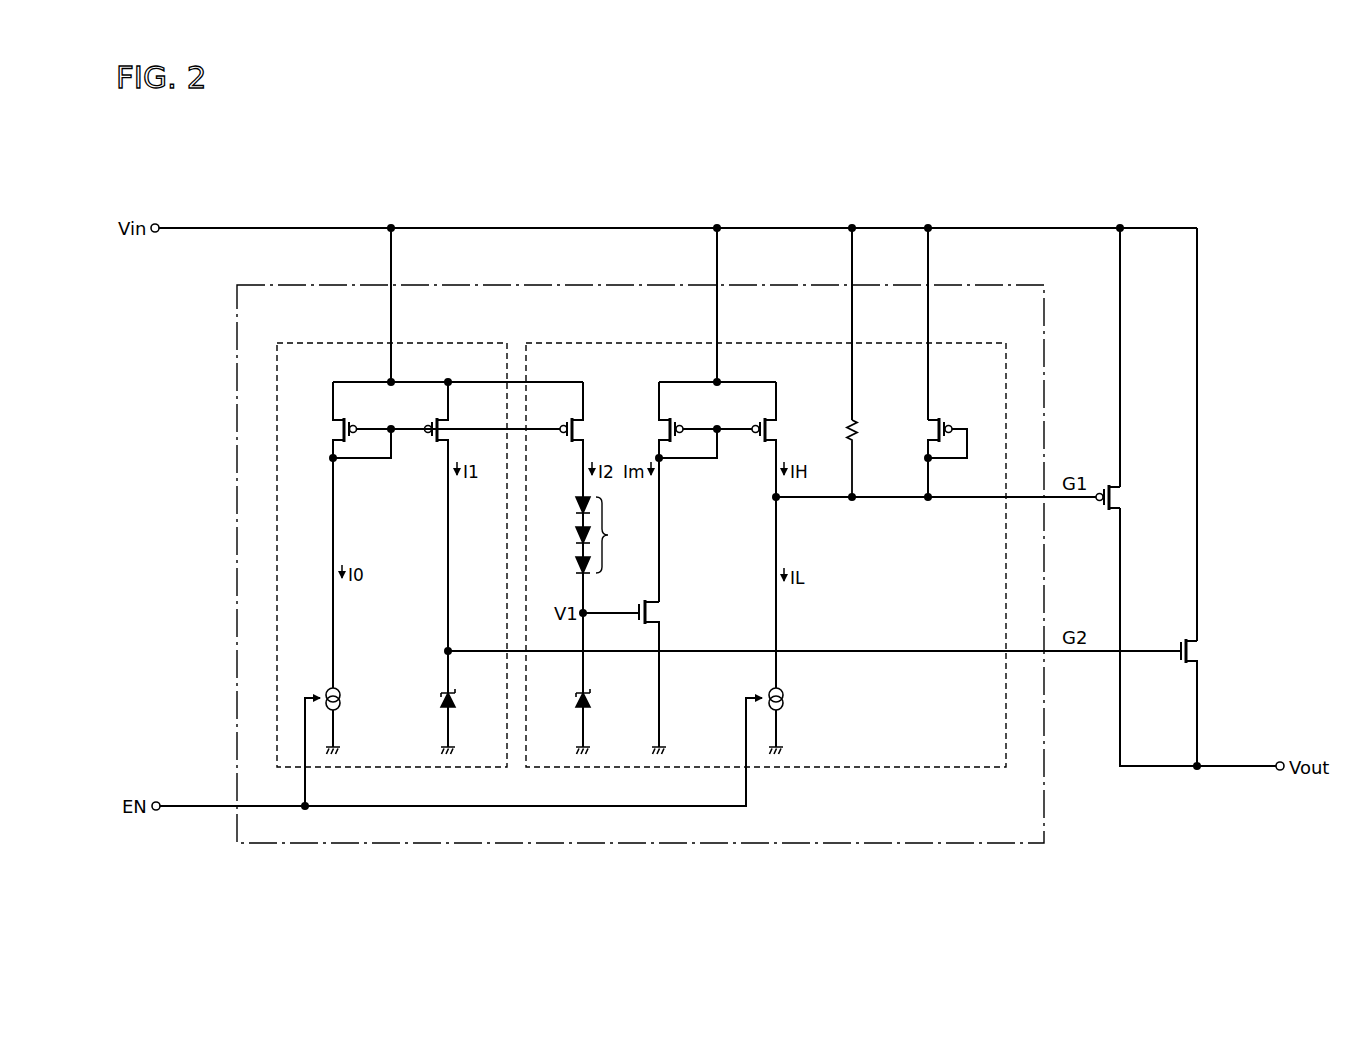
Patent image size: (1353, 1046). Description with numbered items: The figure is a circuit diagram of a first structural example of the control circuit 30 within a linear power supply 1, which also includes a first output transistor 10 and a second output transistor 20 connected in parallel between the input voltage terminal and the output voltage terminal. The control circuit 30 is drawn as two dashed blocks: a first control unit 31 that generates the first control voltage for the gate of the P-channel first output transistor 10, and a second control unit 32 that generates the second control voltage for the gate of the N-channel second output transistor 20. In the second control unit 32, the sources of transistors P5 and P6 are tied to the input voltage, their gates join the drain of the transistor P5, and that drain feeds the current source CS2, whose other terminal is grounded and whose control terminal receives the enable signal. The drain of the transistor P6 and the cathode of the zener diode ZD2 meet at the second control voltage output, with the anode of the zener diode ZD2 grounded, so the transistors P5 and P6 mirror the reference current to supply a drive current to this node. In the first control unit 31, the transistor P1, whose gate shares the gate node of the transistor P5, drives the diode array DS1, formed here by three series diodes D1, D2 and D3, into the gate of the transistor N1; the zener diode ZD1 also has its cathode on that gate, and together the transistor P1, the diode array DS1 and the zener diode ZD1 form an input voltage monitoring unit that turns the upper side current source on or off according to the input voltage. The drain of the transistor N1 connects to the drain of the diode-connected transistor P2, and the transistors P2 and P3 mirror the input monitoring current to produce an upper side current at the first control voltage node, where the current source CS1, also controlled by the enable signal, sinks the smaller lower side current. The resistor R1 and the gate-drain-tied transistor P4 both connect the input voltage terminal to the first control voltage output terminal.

The linear power supply 1 is at (1237, 187).
The first output transistor 10 is at (1129, 497).
The second output transistor 20 is at (1210, 702).
The control circuit 30 is at (639, 285).
The first control unit 31 is at (774, 343).
The second control unit 32 is at (447, 343).
The P-channel MOS field-effect transistor P1 is at (590, 439).
The P-channel MOS field-effect transistor P2 is at (670, 492).
The P-channel MOS field-effect transistor P3 is at (783, 535).
The P-channel MOS field-effect transistor P4 is at (954, 425).
The P-channel MOS field-effect transistor P5 is at (344, 535).
The P-channel MOS field-effect transistor P6 is at (450, 431).
The N-channel MOS field-effect transistor N1 is at (670, 677).
The resistor R1 is at (872, 458).
The diode D1 is at (565, 506).
The diode D2 is at (565, 529).
The diode D3 is at (565, 559).
The diode array DS1 is at (622, 535).
The zener diode ZD1 is at (610, 663).
The zener diode ZD2 is at (475, 702).
The current source CS1 is at (803, 721).
The current source CS2 is at (360, 721).